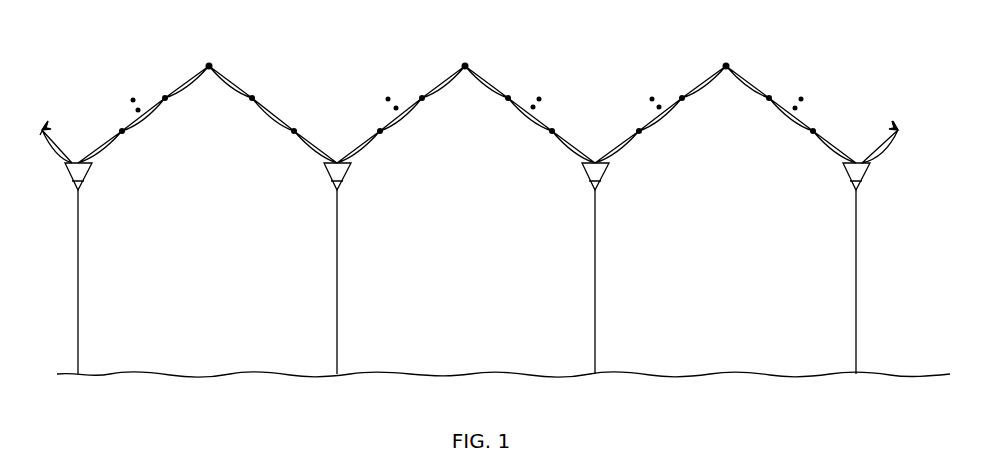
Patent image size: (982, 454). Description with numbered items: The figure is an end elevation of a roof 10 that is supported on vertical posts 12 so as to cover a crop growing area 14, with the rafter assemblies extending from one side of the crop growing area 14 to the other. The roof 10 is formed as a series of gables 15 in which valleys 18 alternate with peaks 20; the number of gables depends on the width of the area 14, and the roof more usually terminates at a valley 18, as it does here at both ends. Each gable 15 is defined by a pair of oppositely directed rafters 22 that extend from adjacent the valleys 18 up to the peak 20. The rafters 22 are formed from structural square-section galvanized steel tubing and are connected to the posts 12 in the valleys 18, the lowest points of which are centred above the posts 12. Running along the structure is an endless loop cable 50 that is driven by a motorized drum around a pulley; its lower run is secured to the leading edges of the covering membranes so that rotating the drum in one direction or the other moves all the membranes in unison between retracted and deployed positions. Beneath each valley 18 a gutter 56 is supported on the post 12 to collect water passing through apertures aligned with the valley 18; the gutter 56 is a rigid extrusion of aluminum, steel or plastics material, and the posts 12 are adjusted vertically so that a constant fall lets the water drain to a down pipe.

The roof 10 is at (418, 89).
The vertical post 12 is at (338, 277).
The crop growing area 14 is at (503, 397).
The gable 15 is at (467, 138).
The valley 18 is at (337, 160).
The peak 20 is at (210, 62).
The rafter 22 is at (144, 125).
The endless loop cable 50 is at (135, 97).
The gutter 56 is at (602, 178).